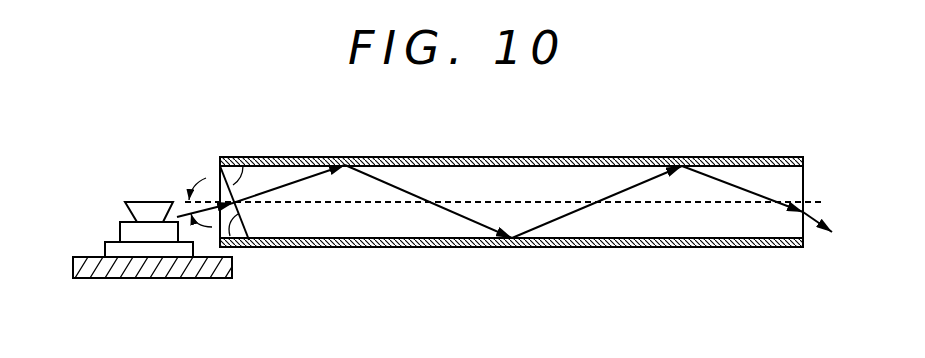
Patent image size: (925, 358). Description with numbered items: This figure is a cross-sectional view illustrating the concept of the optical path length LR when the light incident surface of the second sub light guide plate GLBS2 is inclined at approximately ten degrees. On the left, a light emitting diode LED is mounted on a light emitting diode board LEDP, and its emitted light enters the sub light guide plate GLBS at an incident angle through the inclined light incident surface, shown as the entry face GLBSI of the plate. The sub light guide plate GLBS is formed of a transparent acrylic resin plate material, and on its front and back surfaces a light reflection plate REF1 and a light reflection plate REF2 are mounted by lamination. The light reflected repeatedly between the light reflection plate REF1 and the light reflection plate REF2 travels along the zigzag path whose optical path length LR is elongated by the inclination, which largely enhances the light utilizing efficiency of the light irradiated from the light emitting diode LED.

The light emitting diode LED is at (143, 205).
The light emitting diode board LEDP is at (145, 278).
The sub light guide plate GLBS is at (559, 209).
The light incidence surface of light guide bar GLBSI is at (232, 248).
The second sub light guide plate GLBS2 is at (572, 172).
The light reflection plate REF1 is at (740, 157).
The light reflection plate REF2 is at (737, 248).
The optical path length LR is at (400, 188).